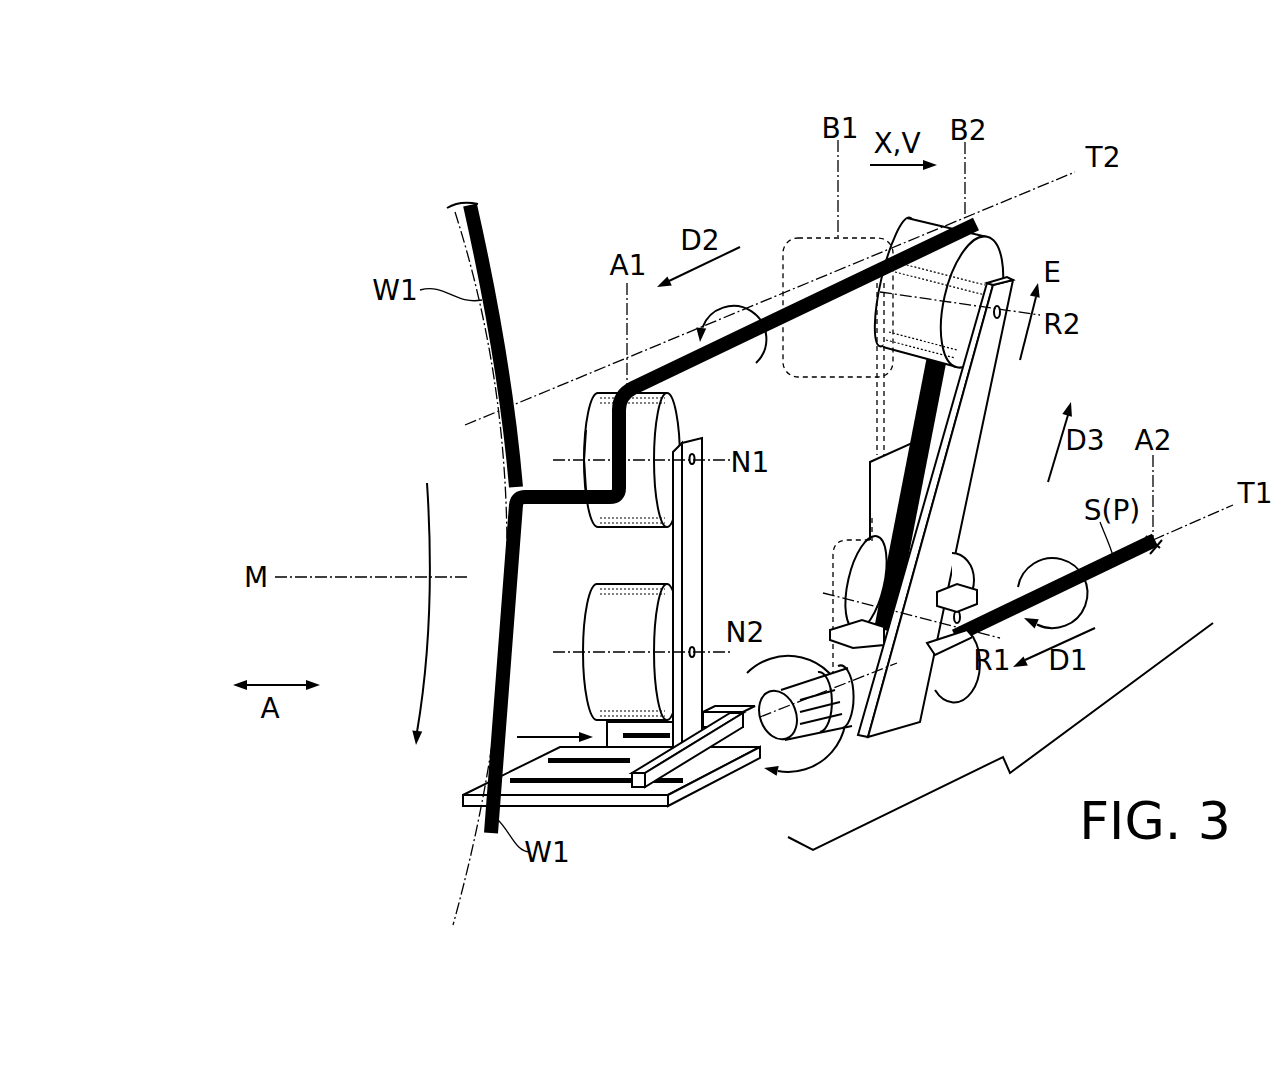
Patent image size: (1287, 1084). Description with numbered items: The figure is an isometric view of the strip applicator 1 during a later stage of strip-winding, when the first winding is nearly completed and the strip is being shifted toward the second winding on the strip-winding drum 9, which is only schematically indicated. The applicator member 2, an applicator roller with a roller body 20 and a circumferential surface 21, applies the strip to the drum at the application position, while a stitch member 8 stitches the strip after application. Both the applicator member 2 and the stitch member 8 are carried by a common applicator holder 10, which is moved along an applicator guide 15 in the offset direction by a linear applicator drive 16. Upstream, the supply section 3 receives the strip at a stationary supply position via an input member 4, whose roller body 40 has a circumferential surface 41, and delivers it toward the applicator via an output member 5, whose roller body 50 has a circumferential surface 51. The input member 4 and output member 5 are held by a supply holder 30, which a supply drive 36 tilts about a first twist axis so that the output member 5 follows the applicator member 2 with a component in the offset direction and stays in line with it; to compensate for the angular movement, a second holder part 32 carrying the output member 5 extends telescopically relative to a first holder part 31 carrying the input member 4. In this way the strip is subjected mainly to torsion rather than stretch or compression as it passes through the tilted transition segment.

The strip applicator 1 is at (754, 499).
The applicator member 2 is at (622, 485).
The supply section 3 is at (1000, 736).
The input member 4 is at (845, 590).
The output member 5 is at (947, 309).
The stitch member 8 is at (587, 680).
The strip-winding drum 9 is at (362, 523).
The applicator holder 10 is at (690, 548).
The applicator guide 15 is at (690, 778).
The applicator drive 16 is at (722, 712).
The roller body 20 is at (595, 527).
The circumferential surface 21 is at (583, 447).
The supply holder 30 is at (958, 507).
The first holder part 31 is at (950, 525).
The second holder part 32 is at (975, 403).
The supply drive 36 is at (800, 760).
The roller body 40 is at (855, 618).
The circumferential surface 41 is at (968, 572).
The roller body 50 is at (883, 380).
The circumferential surface 51 is at (1008, 253).